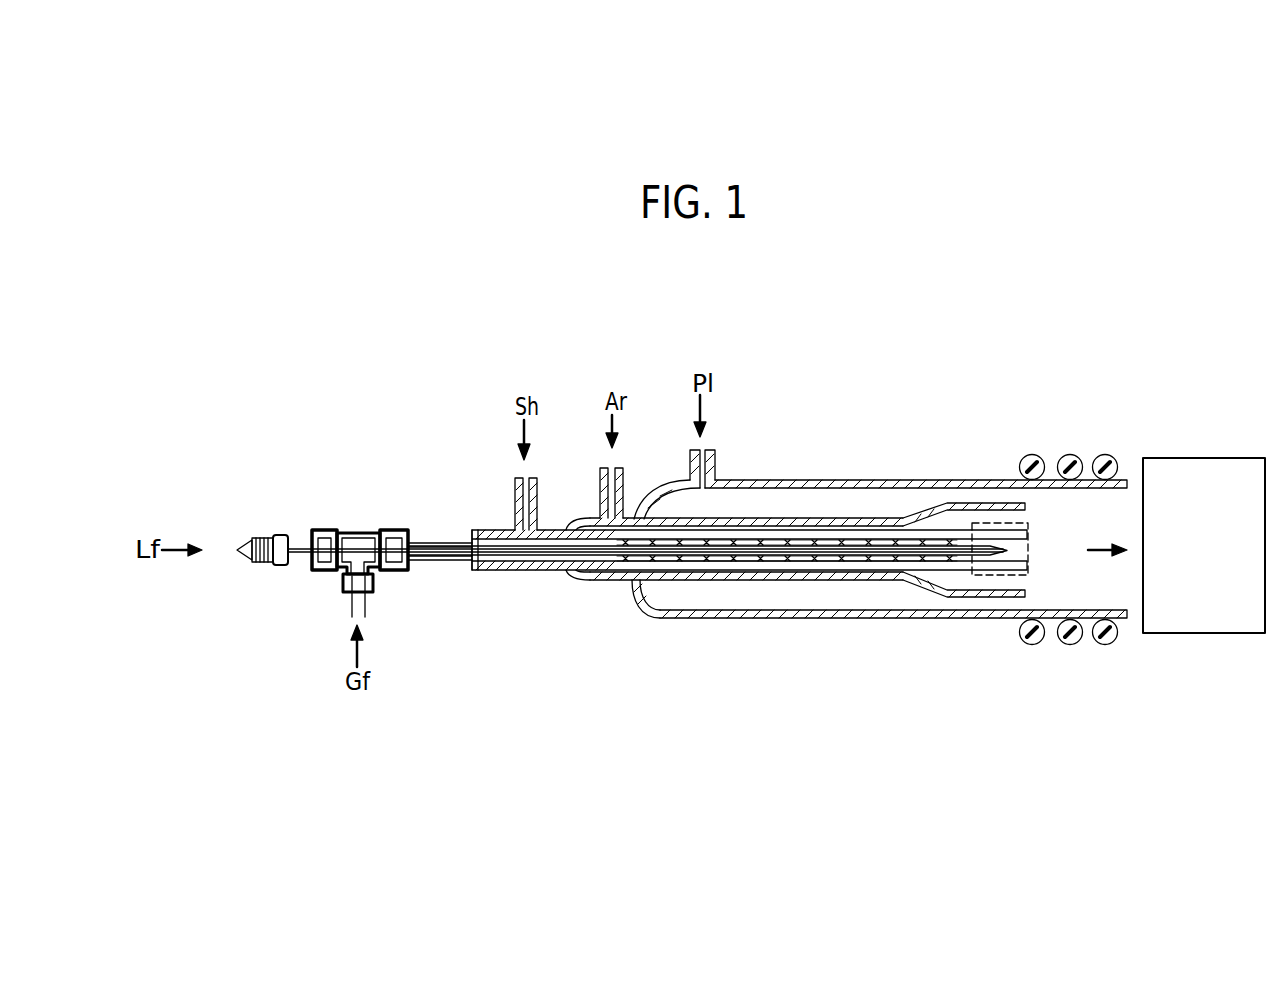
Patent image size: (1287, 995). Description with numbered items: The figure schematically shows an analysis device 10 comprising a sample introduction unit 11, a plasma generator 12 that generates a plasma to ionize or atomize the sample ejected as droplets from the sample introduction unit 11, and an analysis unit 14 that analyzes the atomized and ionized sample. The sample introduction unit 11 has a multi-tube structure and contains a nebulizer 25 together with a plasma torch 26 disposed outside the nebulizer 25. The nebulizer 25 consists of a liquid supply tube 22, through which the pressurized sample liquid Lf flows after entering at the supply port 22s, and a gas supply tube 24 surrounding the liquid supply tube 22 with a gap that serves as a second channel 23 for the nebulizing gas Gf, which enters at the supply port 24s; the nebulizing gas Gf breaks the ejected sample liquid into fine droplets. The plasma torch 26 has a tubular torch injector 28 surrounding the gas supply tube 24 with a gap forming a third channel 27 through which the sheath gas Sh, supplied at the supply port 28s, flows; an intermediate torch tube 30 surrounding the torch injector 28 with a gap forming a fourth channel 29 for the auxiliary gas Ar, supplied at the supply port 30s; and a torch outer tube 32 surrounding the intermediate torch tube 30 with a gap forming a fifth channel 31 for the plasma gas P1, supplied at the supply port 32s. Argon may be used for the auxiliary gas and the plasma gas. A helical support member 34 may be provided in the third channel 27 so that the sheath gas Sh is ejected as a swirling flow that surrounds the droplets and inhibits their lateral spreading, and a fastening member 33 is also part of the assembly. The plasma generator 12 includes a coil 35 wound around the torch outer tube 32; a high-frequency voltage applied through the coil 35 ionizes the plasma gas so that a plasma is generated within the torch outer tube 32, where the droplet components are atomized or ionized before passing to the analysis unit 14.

The analysis device 10 is at (390, 322).
The sample introduction unit 11 is at (794, 410).
The plasma generator 12 is at (1074, 410).
The analysis unit 14 is at (1204, 456).
The liquid supply tube 22 is at (538, 571).
The supply port 22s is at (237, 551).
The second channel 23 is at (445, 563).
The gas supply tube 24 is at (565, 571).
The supply port 24s is at (362, 617).
The nebulizer 25 is at (568, 645).
The plasma torch 26 is at (777, 667).
The third channel 27 is at (603, 581).
The torch injector 28 is at (668, 572).
The supply port 28s is at (516, 477).
The fourth channel 29 is at (815, 571).
The intermediate torch tube 30 is at (706, 582).
The supply port 30s is at (606, 467).
The fifth channel 31 is at (885, 597).
The torch outer tube 32 is at (771, 619).
The supply port 32s is at (696, 449).
The fastening member 33 is at (487, 571).
The support member 34 is at (850, 571).
The coil 35 is at (1030, 645).